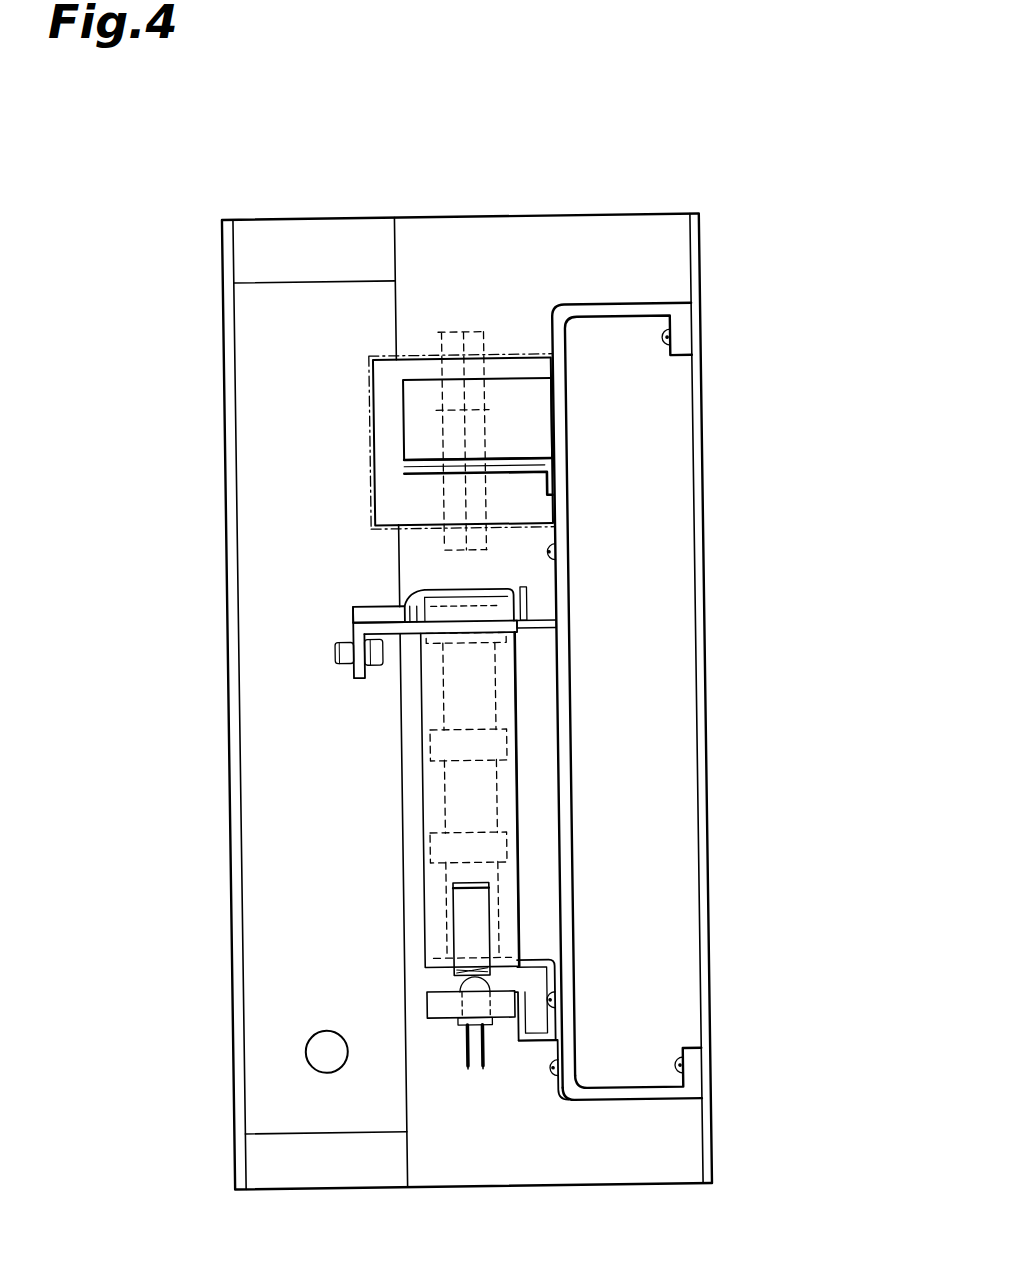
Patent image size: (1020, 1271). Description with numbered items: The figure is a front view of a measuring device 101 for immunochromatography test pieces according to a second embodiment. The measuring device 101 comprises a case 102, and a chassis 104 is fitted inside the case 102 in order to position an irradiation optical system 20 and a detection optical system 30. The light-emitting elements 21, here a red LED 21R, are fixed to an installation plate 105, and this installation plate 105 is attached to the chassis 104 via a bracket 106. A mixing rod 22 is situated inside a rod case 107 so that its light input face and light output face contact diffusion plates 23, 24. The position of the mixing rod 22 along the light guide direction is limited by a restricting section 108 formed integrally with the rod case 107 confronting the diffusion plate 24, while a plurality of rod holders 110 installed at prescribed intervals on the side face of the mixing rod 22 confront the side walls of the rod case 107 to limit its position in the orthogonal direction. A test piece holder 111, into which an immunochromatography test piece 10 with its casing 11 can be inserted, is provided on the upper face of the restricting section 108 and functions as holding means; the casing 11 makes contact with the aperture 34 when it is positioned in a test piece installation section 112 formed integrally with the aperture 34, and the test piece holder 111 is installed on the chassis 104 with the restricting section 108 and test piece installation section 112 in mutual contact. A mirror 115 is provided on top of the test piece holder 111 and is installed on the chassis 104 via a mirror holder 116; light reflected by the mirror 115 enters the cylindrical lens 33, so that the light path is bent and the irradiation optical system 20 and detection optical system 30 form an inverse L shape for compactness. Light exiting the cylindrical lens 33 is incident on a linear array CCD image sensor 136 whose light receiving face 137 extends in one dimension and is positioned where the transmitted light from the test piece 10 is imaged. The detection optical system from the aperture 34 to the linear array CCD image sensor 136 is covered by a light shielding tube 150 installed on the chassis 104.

The measuring device 101 is at (727, 175).
The case 102 is at (710, 391).
The chassis 104 is at (608, 305).
The detection optical system 30 is at (415, 339).
The mirror holder 116 is at (409, 427).
The mirror 115 is at (408, 469).
The light shielding tube 150 is at (377, 355).
The linear array CCD image sensor 136 is at (466, 332).
The light receiving face 137 is at (468, 350).
The cylindrical lens 33 is at (444, 418).
The aperture 34 is at (490, 590).
The immunochromatography test piece 10 is at (428, 594).
The casing 11 is at (528, 601).
The test piece installation section 112 is at (531, 617).
The restricting section 108 is at (549, 633).
The test piece holder 111 is at (336, 598).
The diffusion plate 24 is at (466, 637).
The mixing rod 22 is at (496, 806).
The irradiation optical system 20 is at (391, 898).
The rod holders 110 is at (424, 748).
The diffusion plate 23 is at (450, 950).
The red LED 21R is at (403, 992).
The light-emitting elements 21 is at (458, 985).
The installation plate 105 is at (433, 1018).
The rod case 107 is at (517, 936).
The bracket 106 is at (517, 1046).